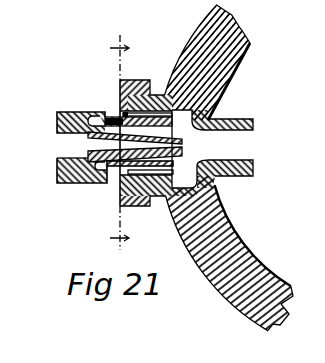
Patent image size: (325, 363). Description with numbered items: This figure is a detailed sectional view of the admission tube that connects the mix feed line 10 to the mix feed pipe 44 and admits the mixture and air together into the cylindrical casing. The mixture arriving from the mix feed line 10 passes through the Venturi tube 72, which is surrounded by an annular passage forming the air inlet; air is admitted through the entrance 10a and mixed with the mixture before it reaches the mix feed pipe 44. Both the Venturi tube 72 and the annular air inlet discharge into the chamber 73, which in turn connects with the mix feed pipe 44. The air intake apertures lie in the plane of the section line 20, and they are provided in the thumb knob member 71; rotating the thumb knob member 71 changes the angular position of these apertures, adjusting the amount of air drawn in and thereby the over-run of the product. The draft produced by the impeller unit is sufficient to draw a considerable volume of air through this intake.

The mix feed line 10 is at (57, 151).
The air entrance 10a is at (124, 173).
The section line 20- 20 is at (107, 142).
The mix feed pipe 44 is at (255, 160).
The thumb knob member 71 is at (141, 210).
The Venturi tube 72 is at (183, 145).
The chamber 73 is at (199, 169).